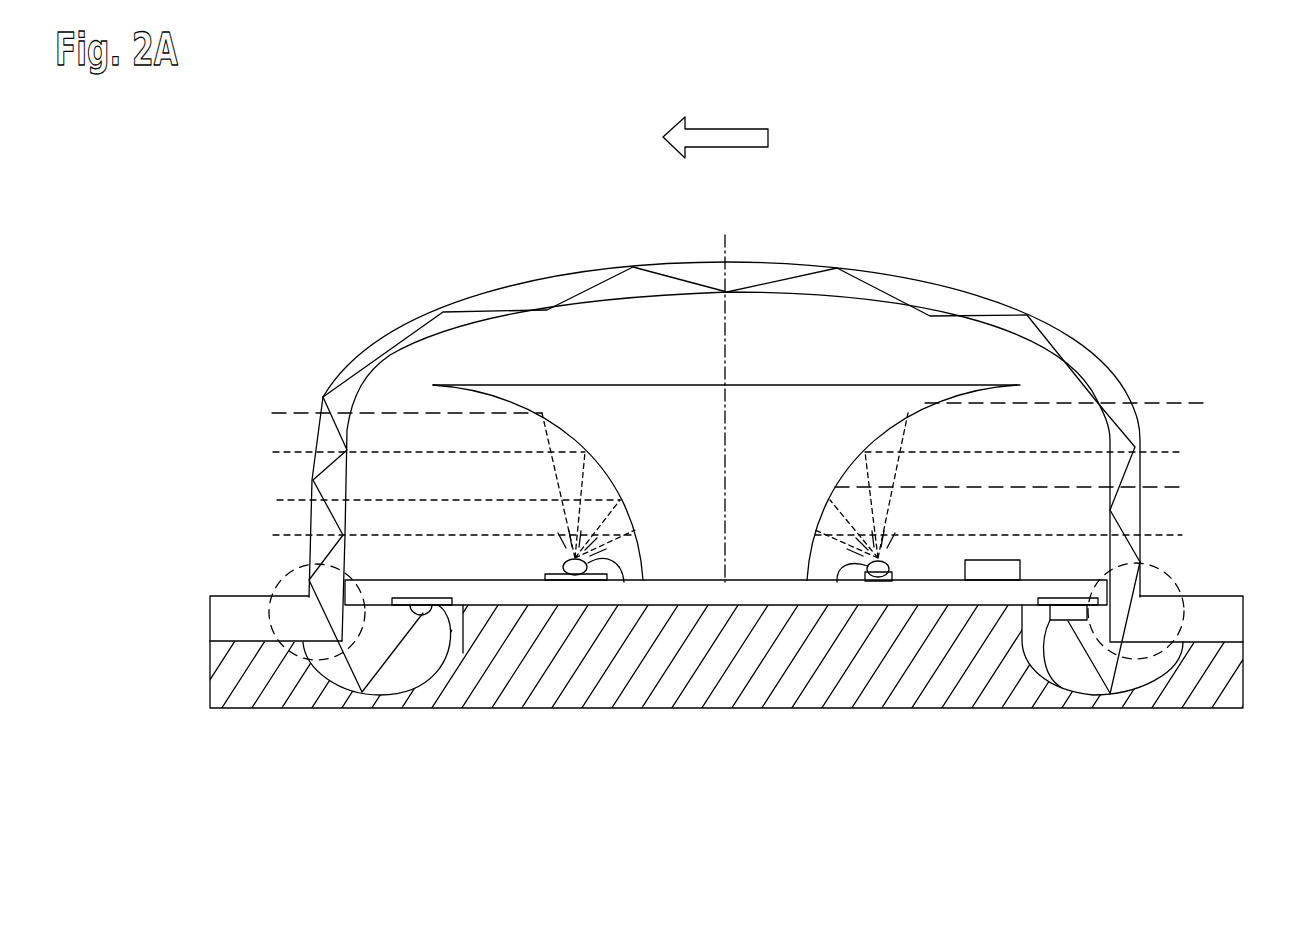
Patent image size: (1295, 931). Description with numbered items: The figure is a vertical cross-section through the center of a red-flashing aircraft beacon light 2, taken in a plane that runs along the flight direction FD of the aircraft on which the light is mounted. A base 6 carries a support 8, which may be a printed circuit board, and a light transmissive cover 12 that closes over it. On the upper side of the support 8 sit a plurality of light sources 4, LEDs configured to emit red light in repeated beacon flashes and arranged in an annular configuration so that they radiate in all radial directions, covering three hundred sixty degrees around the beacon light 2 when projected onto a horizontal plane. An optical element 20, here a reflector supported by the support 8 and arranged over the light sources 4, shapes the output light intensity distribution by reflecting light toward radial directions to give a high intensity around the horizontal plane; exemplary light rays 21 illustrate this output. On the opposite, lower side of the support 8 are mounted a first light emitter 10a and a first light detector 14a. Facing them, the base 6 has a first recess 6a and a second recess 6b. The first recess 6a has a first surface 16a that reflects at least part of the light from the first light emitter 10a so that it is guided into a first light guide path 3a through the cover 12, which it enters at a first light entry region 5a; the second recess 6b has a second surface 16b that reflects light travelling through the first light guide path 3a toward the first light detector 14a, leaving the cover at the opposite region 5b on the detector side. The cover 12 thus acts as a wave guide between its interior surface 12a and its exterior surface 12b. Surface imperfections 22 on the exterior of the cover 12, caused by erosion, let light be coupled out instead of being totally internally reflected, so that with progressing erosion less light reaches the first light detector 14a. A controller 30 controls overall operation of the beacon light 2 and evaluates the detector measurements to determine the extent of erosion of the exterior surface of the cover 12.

The aircraft beacon light 2 is at (1117, 246).
The first light guide path 3a is at (673, 468).
The light sources 4 is at (625, 582).
The first light entry region 5a is at (268, 588).
The right fastening region 5b is at (1177, 555).
The base 6 is at (876, 668).
The first recess 6a is at (367, 656).
The second recess 6b is at (1107, 669).
The support 8 is at (540, 605).
The first light emitter 10a is at (448, 650).
The light transmissive cover 12 is at (750, 405).
The inner surface of cover 12a is at (855, 318).
The outer surface of cover 12b is at (940, 288).
The first light detector 14a is at (1068, 678).
The first surface 16a is at (338, 675).
The second surface 16b is at (1068, 678).
The optical element 20 is at (555, 383).
The light rays 21 is at (285, 498).
The surface imperfections 22 is at (320, 396).
The controller 30 is at (965, 565).
The flight direction FD is at (726, 127).